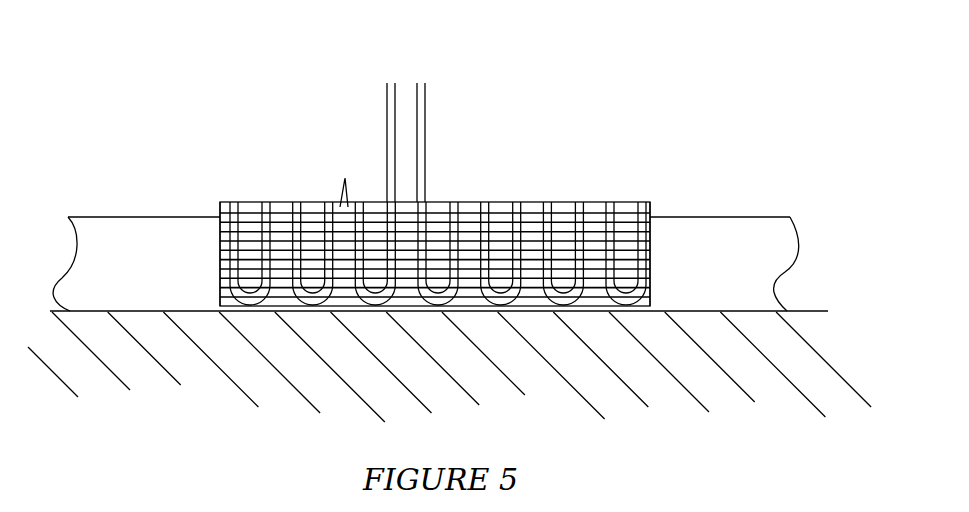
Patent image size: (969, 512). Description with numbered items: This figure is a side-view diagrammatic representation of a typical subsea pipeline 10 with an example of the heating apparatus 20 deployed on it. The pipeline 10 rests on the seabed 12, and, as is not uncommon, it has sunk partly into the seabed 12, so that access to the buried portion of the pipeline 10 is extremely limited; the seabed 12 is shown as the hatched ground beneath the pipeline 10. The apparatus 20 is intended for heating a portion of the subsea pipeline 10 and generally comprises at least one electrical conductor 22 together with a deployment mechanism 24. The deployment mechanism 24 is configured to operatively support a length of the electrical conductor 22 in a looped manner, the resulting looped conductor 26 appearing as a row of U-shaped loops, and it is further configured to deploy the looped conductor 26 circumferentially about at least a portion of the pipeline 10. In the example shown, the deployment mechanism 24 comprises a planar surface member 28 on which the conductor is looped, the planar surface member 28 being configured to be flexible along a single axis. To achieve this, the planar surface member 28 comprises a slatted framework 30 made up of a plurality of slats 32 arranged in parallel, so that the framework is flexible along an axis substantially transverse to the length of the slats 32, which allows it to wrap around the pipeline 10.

The subsea pipeline 10 is at (130, 157).
The seabed 12 is at (813, 311).
The apparatus 20 is at (250, 128).
The electrical conductor 22 is at (424, 106).
The deployment mechanism 24 is at (648, 190).
The looped conductor 26 is at (545, 207).
The planar surface member 28 is at (220, 250).
The slatted framework 30 is at (313, 207).
The slats 32 is at (348, 176).